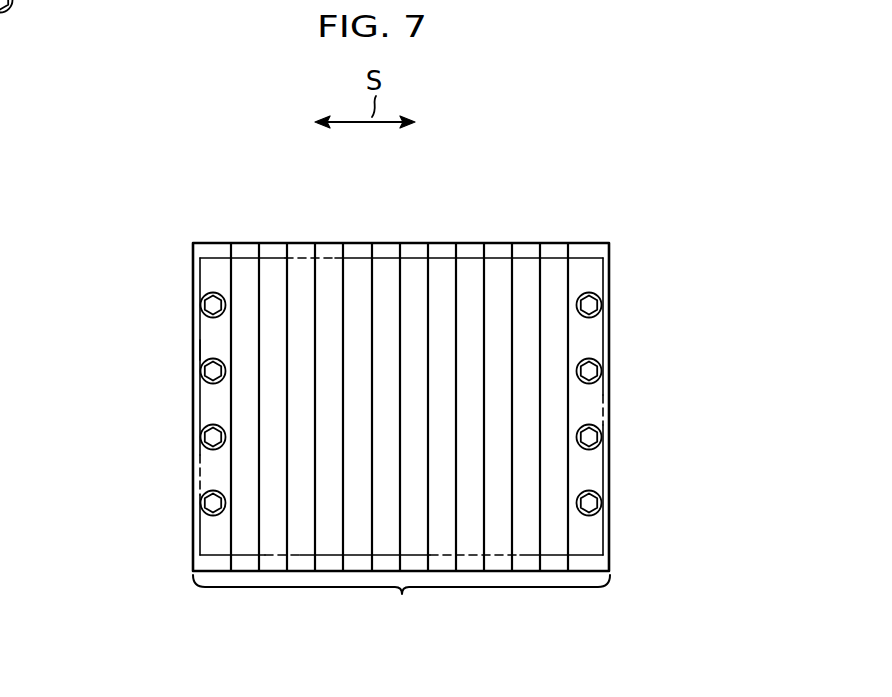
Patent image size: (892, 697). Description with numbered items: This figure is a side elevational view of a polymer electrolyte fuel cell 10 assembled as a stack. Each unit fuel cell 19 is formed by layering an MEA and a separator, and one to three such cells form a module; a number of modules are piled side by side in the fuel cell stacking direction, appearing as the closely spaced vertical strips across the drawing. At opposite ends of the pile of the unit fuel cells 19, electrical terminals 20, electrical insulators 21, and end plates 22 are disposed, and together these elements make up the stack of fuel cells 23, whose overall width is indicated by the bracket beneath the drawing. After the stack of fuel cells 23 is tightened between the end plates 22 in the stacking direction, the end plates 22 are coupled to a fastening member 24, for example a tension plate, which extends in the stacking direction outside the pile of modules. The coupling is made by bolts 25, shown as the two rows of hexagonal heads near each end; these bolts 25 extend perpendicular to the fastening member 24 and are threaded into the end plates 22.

The polymer electrolyte fuel cell 10 is at (610, 485).
The unit fuel cell 19 is at (305, 249).
The electrical terminal 20 is at (277, 250).
The electrical insulator 21 is at (243, 250).
The end plate 22 is at (208, 249).
The stack of fuel cells 23 is at (401, 606).
The fastening member 24 is at (198, 348).
The bolt 25 is at (210, 307).